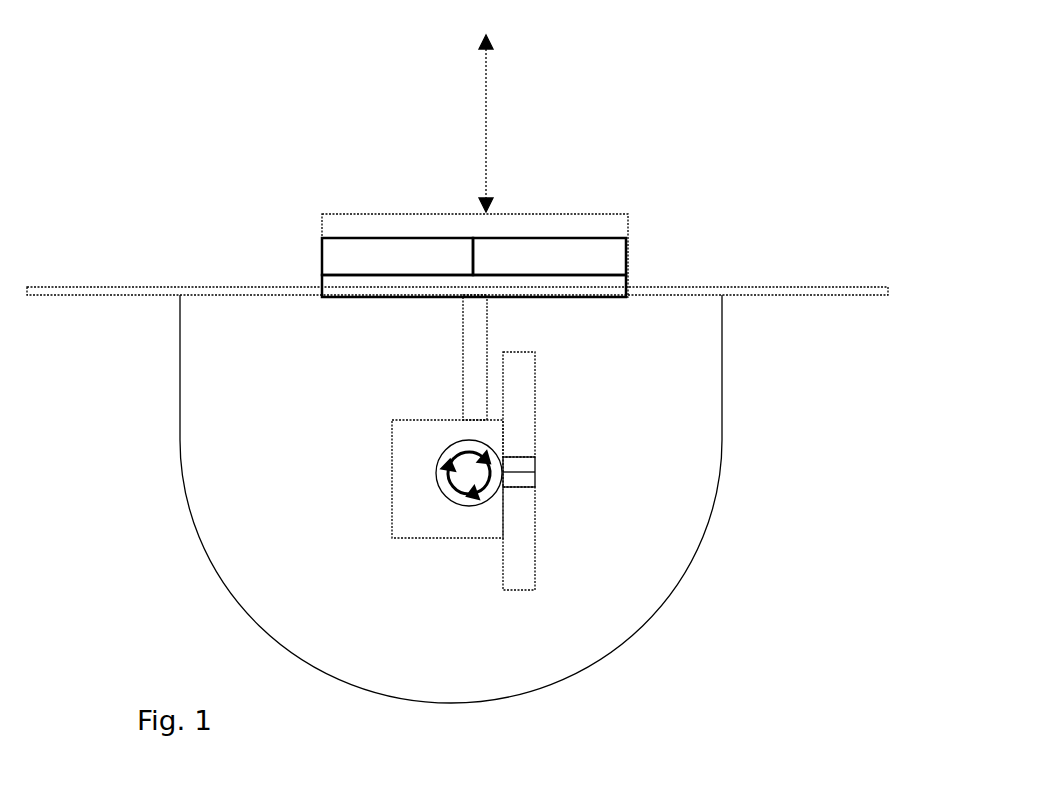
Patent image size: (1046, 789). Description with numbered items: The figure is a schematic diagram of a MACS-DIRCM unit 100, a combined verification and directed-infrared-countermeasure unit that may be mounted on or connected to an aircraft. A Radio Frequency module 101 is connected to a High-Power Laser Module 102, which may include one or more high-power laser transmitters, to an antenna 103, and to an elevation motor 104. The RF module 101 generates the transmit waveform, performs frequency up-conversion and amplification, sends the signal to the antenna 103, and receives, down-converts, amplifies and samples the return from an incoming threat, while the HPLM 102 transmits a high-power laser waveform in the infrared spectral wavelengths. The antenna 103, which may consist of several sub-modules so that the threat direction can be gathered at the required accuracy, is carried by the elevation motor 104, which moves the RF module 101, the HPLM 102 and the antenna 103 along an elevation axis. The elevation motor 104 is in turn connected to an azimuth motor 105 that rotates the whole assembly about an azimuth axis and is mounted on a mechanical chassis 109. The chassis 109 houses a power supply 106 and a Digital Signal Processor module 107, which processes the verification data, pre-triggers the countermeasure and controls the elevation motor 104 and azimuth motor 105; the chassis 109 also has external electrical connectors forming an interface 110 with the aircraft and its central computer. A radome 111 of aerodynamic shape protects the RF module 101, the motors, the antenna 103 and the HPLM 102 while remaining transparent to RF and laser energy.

The MACS-DIRCM unit 100 is at (664, 81).
The Radio Frequency (RF) module 101 is at (380, 490).
The High-Power Laser Module (HPLM) 102 is at (547, 473).
The antenna 103 is at (547, 425).
The elevation motor 104 is at (425, 452).
The azimuth motor 105 is at (530, 290).
The power supply 106 is at (387, 252).
The Digital Signal Processor (DSP) module 107 is at (585, 252).
The mechanical chassis 109 is at (350, 228).
The interface 110 is at (467, 147).
The radome 111 is at (240, 605).